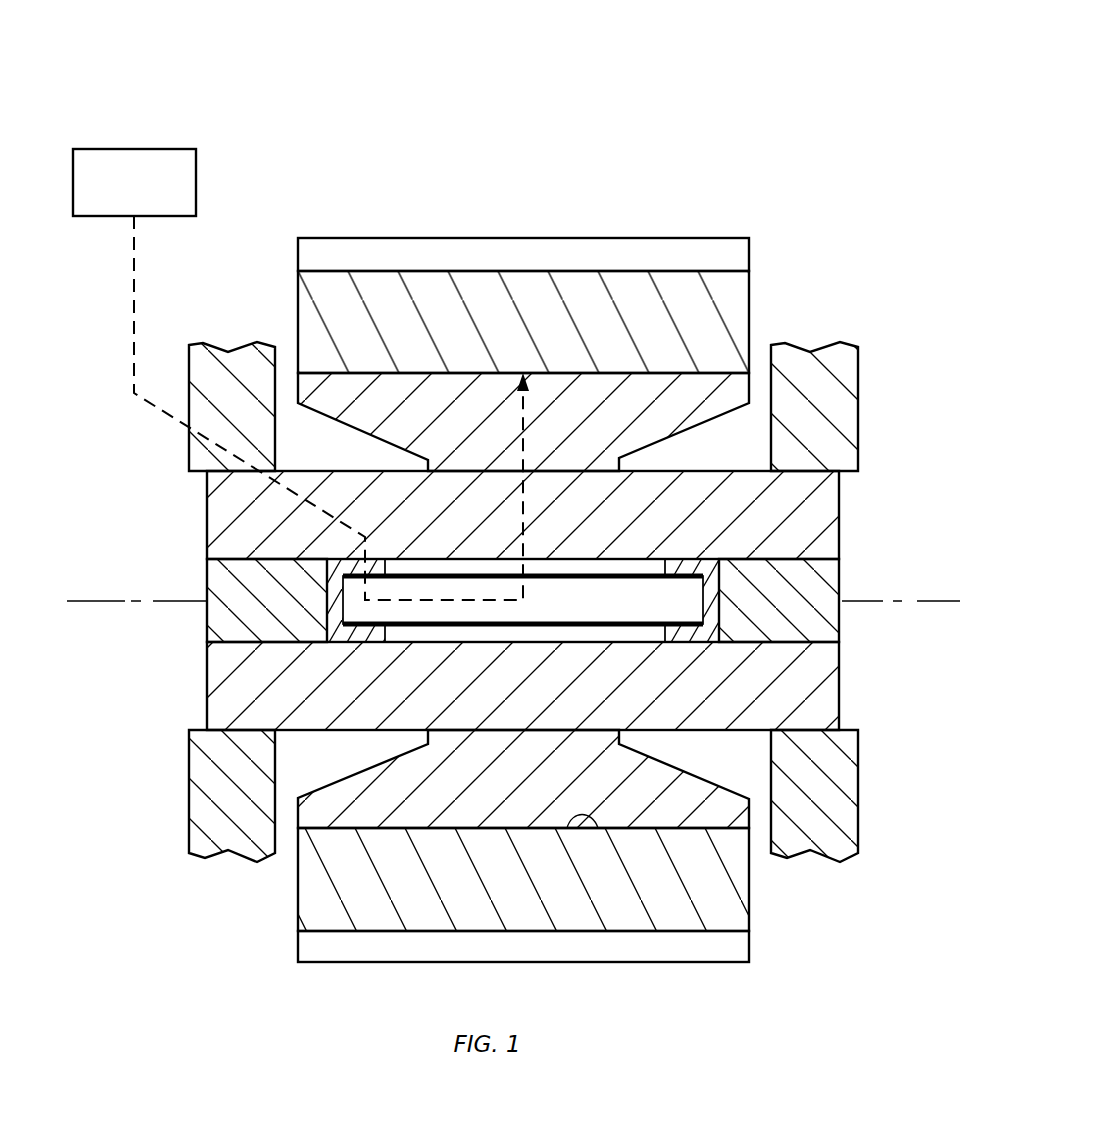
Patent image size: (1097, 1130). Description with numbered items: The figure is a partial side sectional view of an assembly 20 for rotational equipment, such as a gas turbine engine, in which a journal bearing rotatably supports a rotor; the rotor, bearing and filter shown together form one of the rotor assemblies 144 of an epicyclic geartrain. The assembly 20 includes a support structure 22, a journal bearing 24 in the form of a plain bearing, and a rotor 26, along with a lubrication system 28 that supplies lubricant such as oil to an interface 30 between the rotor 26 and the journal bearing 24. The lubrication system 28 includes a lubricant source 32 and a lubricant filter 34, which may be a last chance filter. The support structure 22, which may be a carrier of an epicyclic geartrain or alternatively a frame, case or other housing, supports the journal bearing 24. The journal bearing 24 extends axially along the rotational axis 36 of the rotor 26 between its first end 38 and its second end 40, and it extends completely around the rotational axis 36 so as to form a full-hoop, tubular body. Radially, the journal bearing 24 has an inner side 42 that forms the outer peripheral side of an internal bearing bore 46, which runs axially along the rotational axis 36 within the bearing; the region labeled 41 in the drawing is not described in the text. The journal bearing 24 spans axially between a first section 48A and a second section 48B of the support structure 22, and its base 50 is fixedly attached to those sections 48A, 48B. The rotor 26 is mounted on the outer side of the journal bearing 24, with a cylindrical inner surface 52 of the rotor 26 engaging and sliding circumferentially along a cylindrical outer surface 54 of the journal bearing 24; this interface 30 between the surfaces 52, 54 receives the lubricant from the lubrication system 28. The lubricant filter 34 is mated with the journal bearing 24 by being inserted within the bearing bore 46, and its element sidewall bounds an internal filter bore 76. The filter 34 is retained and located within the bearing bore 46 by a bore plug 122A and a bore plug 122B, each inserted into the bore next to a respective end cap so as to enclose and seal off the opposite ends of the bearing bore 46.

The assembly for rotational equipment 20 is at (693, 98).
The rotor assembly 144 is at (570, 307).
The rotor 26 is at (757, 308).
The interface 30 is at (614, 366).
The support structure 22 is at (864, 390).
The first end 38 is at (529, 512).
The second end 40 is at (840, 497).
The bore plug 122A is at (207, 625).
The bore plug 122B is at (840, 585).
The lubricant filter 34 is at (694, 554).
The filter bore 76 is at (612, 609).
The journal bearing 24 is at (570, 796).
The base 50 is at (840, 658).
The cylindrical outer surface 54 is at (548, 833).
The base plate 41 is at (671, 830).
The cylindrical inner surface 52 is at (598, 830).
The first section 48A is at (189, 787).
The second section 48B is at (860, 778).
The bearing bore 46 is at (548, 640).
The inner side 42 is at (620, 628).
The rotational axis 36 is at (88, 598).
The lubricant source 32 is at (196, 190).
The lubrication system 28 is at (108, 280).